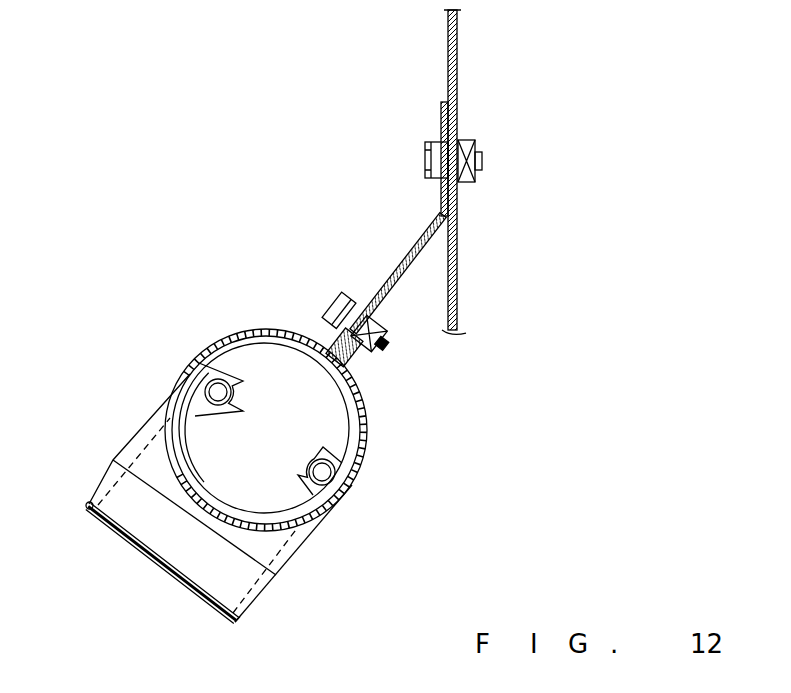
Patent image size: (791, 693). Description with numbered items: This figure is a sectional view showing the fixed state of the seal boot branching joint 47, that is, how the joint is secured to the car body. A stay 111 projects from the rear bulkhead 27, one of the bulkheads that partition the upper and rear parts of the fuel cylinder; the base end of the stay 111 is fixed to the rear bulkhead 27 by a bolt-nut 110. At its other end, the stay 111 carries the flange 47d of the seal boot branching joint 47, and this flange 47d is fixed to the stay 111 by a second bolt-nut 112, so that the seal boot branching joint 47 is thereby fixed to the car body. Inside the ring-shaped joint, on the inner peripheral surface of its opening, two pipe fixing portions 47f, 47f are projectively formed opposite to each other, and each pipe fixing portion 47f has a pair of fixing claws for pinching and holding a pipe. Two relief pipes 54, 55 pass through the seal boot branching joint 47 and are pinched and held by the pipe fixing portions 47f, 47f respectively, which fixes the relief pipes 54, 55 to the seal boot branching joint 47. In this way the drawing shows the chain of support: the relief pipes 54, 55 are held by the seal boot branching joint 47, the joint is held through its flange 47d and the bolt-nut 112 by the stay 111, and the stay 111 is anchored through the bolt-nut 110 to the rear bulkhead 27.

The rear bulkhead 27 is at (447, 43).
The bolt-nut 110 is at (426, 165).
The stay 111 is at (408, 258).
The flange 47d is at (342, 293).
The bolt-nut 112 is at (330, 299).
The seal boot branching joint 47 is at (238, 334).
The relief pipe 55 is at (182, 384).
The relief pipe 54 is at (337, 486).
The pipe fixing portion 47f is at (210, 414).